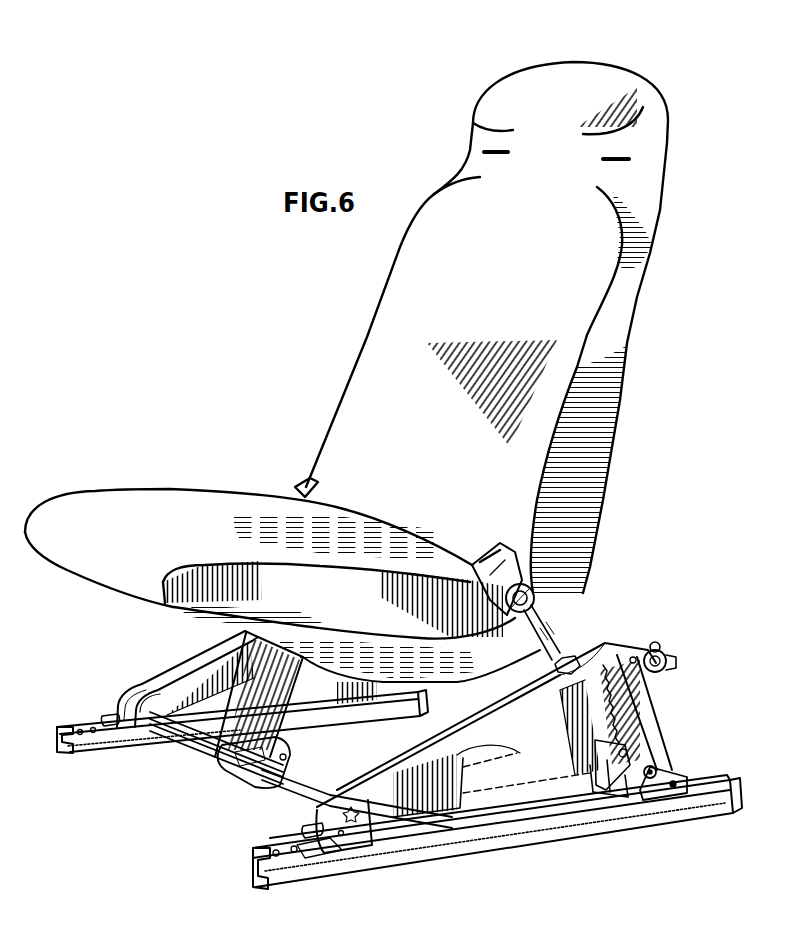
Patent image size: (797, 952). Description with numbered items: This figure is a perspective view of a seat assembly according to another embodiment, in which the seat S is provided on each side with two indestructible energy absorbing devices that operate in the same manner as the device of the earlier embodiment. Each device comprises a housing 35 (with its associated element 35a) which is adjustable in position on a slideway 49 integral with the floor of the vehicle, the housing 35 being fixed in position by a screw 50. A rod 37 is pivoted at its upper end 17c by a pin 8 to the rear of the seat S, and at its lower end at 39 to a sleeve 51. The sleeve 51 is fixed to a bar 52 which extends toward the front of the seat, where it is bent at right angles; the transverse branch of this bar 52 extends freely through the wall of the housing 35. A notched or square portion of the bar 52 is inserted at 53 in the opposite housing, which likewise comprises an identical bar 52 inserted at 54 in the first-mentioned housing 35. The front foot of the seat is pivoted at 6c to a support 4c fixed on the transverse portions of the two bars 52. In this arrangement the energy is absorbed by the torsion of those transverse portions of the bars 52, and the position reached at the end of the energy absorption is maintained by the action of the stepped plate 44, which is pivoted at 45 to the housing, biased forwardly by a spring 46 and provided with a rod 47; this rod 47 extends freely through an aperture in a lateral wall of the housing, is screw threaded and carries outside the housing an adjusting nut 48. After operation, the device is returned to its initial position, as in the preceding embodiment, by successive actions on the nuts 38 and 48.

The seat S is at (418, 283).
The upper end of the rod 17c is at (518, 547).
The pin 8 is at (537, 600).
The rod 37 is at (557, 647).
The nut 38 is at (577, 647).
The rod 47 is at (663, 655).
The adjusting nut 48 is at (670, 663).
The spring 46 is at (643, 693).
The stepped plate 44 is at (630, 722).
The pivot 45 is at (657, 767).
The lower end pivot of the rod 39 is at (619, 753).
The sleeve 51 is at (623, 788).
The side plate 35a is at (187, 665).
The housing 35 is at (200, 690).
The bar 52 is at (277, 787).
The insertion point of the opposite bar 54 is at (163, 690).
The slideway 49 is at (65, 725).
The screw 50 is at (300, 817).
The support 4c is at (223, 767).
The front foot pivot 6c is at (286, 757).
The insertion point of the bar 53 is at (390, 793).